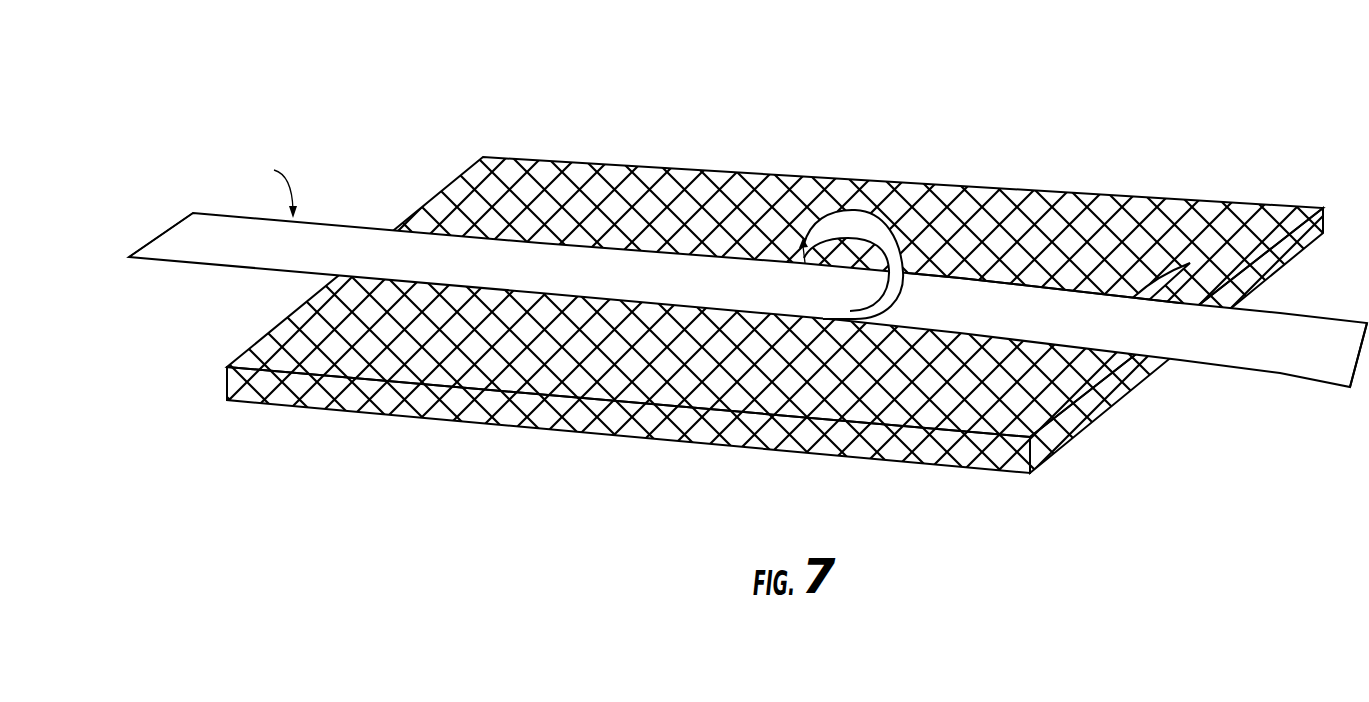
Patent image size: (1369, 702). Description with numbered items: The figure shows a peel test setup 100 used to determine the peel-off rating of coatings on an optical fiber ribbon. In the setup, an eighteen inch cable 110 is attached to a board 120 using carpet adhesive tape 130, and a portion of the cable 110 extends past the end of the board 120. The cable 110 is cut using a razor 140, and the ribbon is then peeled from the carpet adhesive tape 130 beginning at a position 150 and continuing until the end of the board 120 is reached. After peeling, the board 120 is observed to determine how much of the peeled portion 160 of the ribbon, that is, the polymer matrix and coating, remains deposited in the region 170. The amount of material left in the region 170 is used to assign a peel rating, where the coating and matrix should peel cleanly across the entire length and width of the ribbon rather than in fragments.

The peel test setup 100 is at (748, 271).
The cable 110 is at (748, 273).
The board 120 is at (579, 168).
The carpet adhesive tape 130 is at (313, 280).
The razor 140 is at (1129, 312).
The position 150 is at (1098, 316).
The peeled portion 160 is at (851, 222).
The region 170 is at (991, 302).